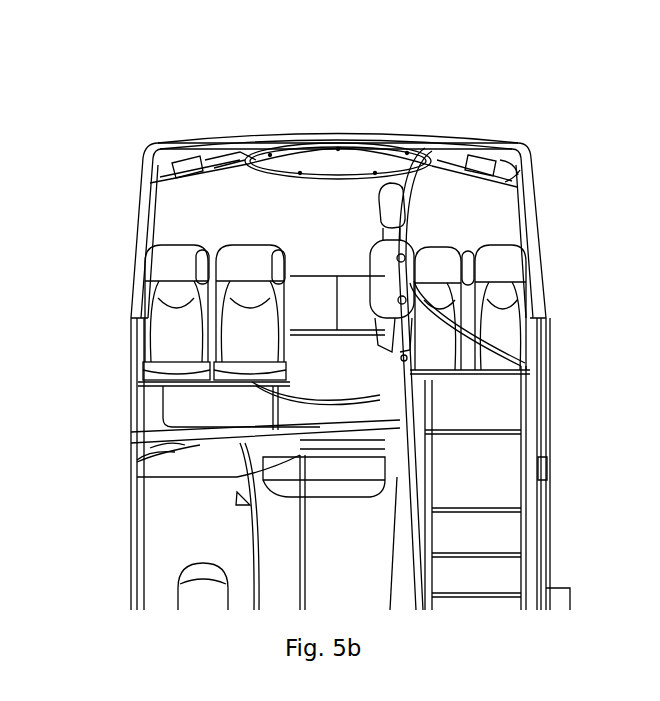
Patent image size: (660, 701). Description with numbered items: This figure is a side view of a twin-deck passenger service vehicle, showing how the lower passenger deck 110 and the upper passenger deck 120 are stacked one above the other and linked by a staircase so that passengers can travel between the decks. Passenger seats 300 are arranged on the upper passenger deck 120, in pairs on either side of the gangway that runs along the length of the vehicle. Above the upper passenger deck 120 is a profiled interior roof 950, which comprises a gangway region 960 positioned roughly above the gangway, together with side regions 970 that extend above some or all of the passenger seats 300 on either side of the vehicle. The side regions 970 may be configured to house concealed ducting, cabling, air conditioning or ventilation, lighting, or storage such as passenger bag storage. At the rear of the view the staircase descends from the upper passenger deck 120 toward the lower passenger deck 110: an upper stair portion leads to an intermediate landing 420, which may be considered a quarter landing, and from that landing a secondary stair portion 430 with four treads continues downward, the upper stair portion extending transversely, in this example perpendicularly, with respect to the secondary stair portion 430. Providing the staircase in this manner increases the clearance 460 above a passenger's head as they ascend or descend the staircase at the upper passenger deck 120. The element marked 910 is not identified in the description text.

The lower passenger deck 110 is at (106, 581).
The upper passenger deck 120 is at (382, 108).
The passenger seats 300 is at (0, 98).
The intermediate landing 420 is at (200, 443).
The secondary stair portion 430 is at (580, 540).
The clearance 460 is at (512, 168).
The central post 910 is at (216, 379).
The profiled interior roof 950 is at (232, 138).
The gangway region 960 is at (305, 150).
The side regions 970 is at (190, 162).